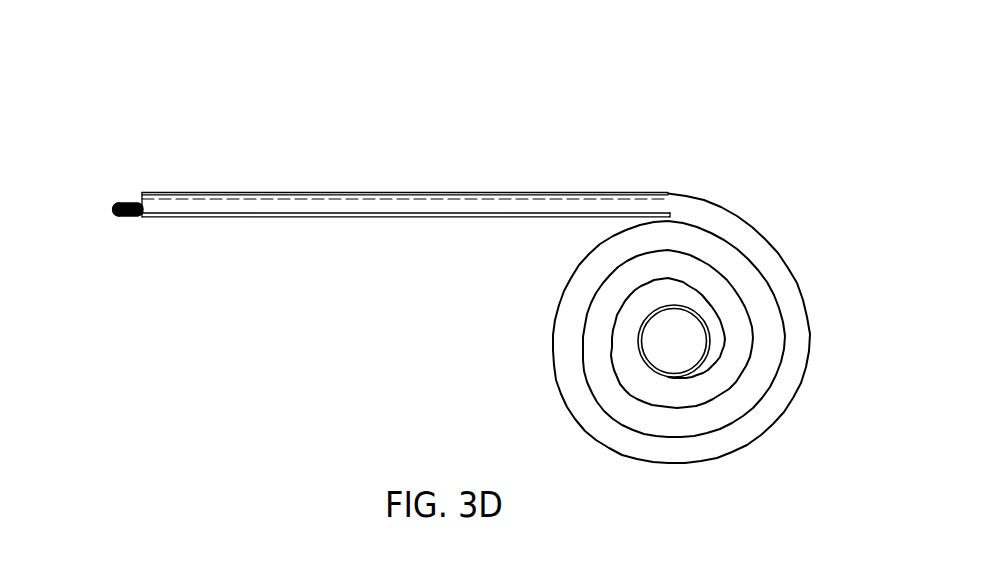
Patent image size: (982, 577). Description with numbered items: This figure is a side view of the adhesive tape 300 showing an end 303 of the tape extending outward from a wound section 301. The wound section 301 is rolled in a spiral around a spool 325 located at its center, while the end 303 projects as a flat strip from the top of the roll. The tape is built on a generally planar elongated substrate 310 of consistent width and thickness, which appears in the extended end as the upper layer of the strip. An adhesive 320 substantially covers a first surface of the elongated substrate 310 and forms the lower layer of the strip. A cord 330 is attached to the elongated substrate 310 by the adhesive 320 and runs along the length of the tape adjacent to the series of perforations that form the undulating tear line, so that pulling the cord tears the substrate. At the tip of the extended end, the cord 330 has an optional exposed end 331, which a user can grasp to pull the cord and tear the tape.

The adhesive tape 300 is at (161, 105).
The wound section 301 is at (793, 288).
The end 303 is at (440, 202).
The elongated substrate 310 is at (352, 207).
The adhesive 320 is at (352, 217).
The spool 325 is at (692, 351).
The cord 330 is at (112, 210).
The exposed end 331 is at (128, 204).